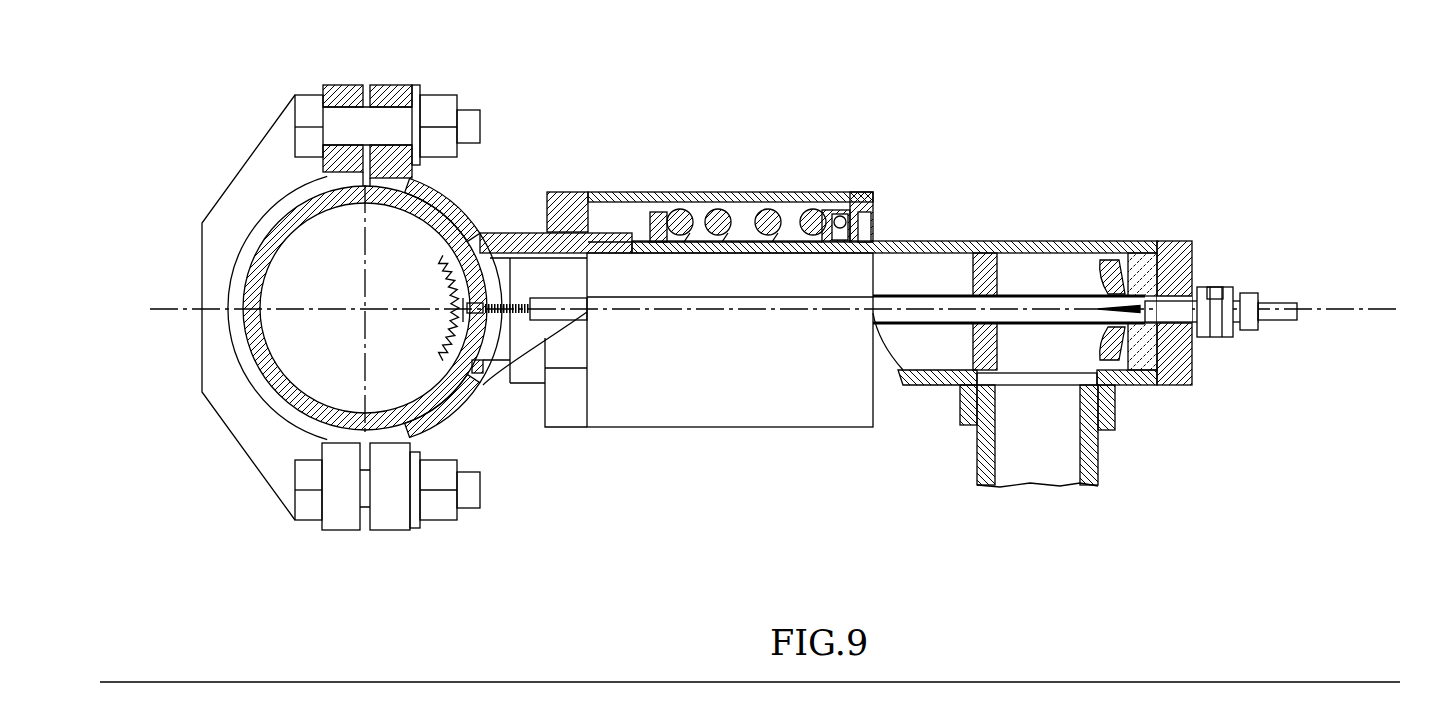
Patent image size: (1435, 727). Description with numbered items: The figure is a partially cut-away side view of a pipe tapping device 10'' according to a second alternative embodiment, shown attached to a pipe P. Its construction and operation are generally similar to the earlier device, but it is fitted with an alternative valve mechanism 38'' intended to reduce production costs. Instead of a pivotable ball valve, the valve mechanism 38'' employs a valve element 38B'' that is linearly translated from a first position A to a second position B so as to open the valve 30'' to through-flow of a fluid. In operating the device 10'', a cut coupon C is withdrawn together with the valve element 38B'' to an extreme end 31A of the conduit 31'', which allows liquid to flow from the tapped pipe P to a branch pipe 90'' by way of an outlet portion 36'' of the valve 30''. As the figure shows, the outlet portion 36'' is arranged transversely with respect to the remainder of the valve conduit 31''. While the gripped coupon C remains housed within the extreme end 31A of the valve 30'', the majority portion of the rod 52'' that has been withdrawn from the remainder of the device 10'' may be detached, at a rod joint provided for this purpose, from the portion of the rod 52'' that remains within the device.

The pipe tapping device 10'' is at (337, 280).
The pipe P is at (252, 358).
The valve 30'' is at (810, 293).
The valve conduit 31'' is at (894, 212).
The first position A is at (983, 232).
The second position B is at (1141, 232).
The extreme end of conduit 31A is at (1152, 232).
The valve mechanism 38'' is at (1204, 352).
The valve element 38B'' is at (1227, 257).
The rod 52'' is at (938, 281).
The outlet portion 36'' is at (918, 435).
The cut coupon C is at (1113, 372).
The branch pipe 90'' is at (1010, 462).